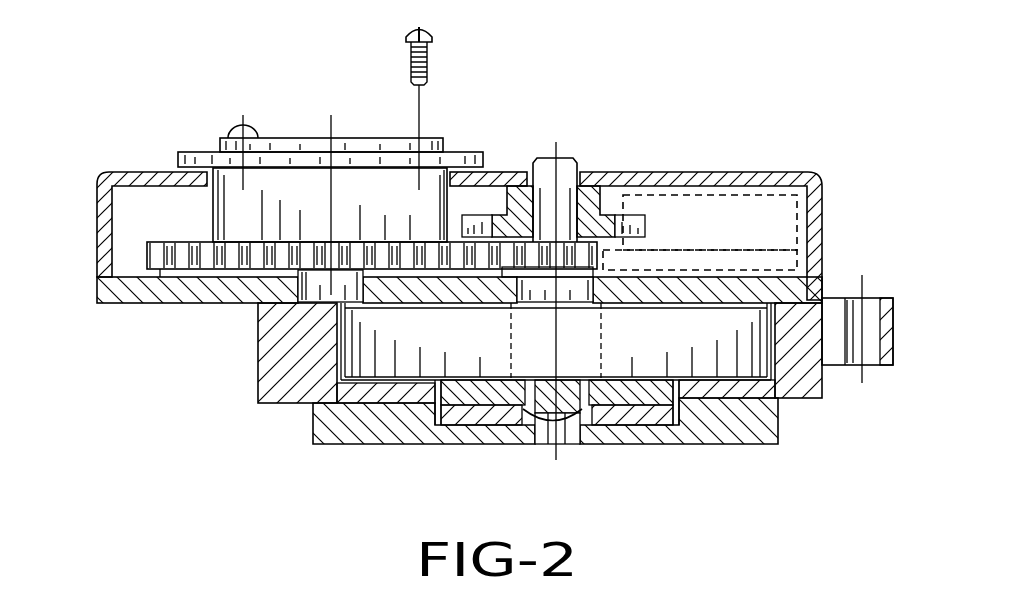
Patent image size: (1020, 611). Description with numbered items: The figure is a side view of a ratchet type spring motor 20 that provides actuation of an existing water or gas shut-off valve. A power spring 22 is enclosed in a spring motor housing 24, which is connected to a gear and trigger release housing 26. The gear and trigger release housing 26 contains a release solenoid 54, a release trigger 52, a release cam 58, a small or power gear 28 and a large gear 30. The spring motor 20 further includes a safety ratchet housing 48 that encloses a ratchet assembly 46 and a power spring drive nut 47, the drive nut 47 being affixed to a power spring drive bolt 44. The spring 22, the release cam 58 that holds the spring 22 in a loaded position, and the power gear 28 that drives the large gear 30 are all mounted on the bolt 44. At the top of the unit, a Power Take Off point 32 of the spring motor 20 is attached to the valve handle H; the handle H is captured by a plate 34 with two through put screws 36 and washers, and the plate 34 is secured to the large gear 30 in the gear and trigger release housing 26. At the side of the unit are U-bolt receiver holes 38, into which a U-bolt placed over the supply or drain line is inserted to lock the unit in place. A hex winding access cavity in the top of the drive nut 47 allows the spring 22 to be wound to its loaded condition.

The ratchet type spring motor 20 is at (720, 132).
The power spring 22 is at (680, 352).
The spring motor housing 24 is at (285, 381).
The gear and trigger release housing 26 is at (784, 176).
The small or power gear 28 is at (563, 250).
The large gear 30 is at (180, 243).
The Power Take Off (PTO) point 32 is at (272, 195).
The plate 34 is at (370, 144).
The through put screws 36 is at (406, 31).
The U-bolt receiver holes 38 is at (870, 357).
The power spring drive bolt 44 is at (512, 340).
The ratchet assembly 46 is at (523, 437).
The power spring drive nut 47 is at (568, 416).
The safety ratchet housing 48 is at (360, 428).
The release trigger 52 is at (752, 263).
The release solenoid 54 is at (740, 220).
The release cam 58 is at (520, 196).
The handle H is at (182, 157).